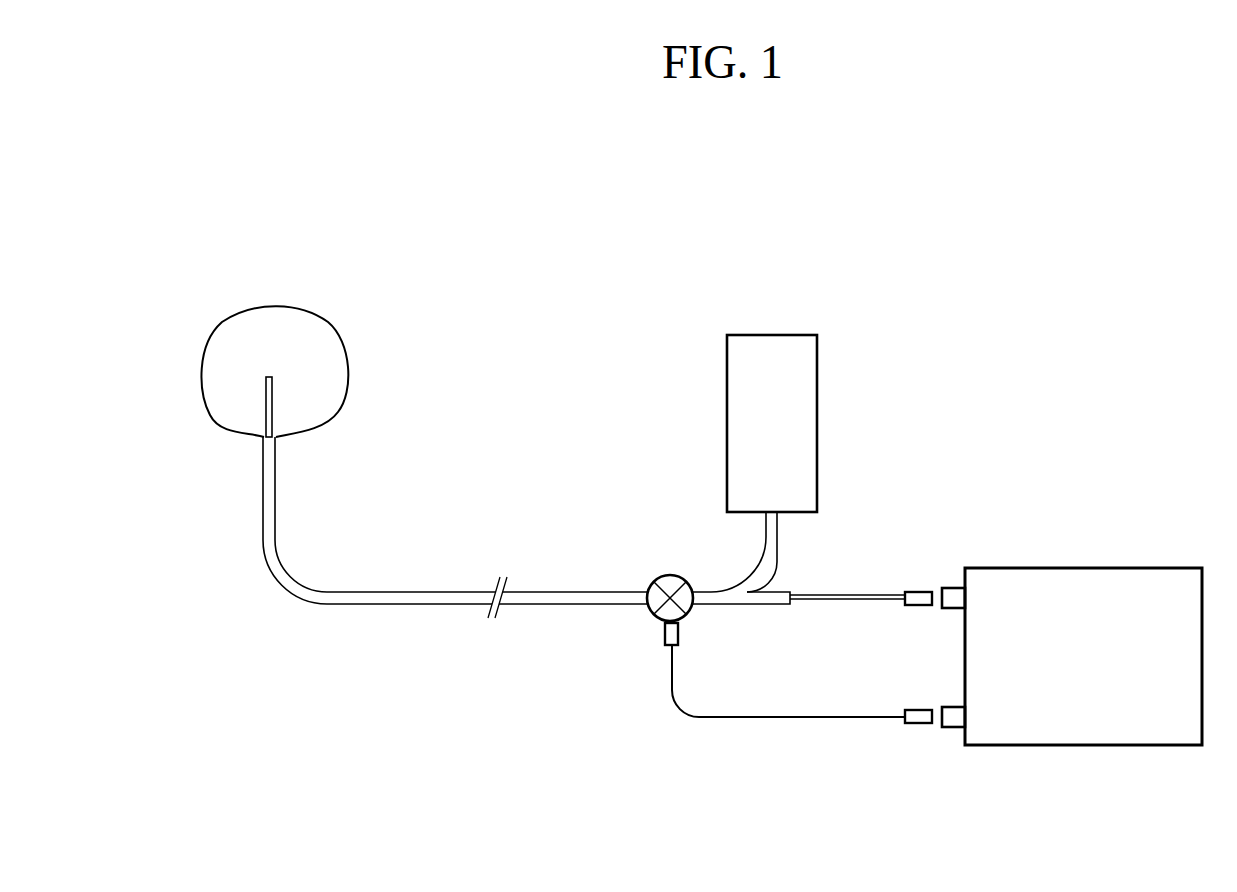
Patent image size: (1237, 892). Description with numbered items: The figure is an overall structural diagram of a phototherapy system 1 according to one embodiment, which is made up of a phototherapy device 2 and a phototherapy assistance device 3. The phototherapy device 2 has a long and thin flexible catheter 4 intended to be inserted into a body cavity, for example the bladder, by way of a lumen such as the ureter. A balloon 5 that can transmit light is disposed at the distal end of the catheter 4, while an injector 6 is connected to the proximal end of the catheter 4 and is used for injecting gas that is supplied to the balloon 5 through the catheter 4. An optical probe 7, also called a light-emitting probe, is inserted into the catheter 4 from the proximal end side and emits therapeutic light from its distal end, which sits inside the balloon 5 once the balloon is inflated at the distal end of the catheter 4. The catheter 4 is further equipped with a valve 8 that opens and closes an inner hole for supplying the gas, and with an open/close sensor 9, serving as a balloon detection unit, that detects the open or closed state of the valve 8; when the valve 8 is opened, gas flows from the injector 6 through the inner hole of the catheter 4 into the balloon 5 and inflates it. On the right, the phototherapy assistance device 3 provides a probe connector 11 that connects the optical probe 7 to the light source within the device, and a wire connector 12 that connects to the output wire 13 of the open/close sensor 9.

The phototherapy system 1 is at (1014, 229).
The phototherapy device 2 is at (930, 413).
The phototherapy assistance device 3 is at (1084, 563).
The catheter 4 is at (411, 591).
The balloon 5 is at (345, 368).
The injector 6 is at (817, 397).
The optical probe 7 is at (851, 591).
The valve 8 is at (666, 573).
The open/close sensor 9 is at (664, 632).
The probe connector 11 is at (947, 587).
The wire connector 12 is at (950, 728).
The output wire 13 is at (803, 719).